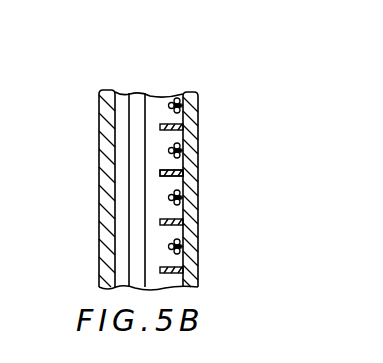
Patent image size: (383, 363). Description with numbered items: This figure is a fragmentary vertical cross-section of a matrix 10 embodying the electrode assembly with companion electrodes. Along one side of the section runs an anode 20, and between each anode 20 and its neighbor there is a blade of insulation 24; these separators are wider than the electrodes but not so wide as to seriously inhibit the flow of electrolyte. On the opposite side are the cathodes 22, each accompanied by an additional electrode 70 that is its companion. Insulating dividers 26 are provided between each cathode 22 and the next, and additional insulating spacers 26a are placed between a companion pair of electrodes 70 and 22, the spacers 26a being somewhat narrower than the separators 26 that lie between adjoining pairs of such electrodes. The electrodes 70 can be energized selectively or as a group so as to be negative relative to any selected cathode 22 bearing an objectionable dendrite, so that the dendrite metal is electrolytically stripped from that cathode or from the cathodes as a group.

The outer wall 10 is at (99, 193).
The anode 20 is at (133, 131).
The blade of insulation 24 is at (150, 80).
The cathode 22 is at (199, 114).
The additional electrode 70 is at (180, 97).
The insulating divider 26 is at (172, 226).
The insulating spacer 26a is at (168, 196).